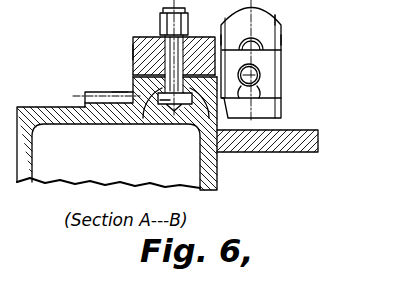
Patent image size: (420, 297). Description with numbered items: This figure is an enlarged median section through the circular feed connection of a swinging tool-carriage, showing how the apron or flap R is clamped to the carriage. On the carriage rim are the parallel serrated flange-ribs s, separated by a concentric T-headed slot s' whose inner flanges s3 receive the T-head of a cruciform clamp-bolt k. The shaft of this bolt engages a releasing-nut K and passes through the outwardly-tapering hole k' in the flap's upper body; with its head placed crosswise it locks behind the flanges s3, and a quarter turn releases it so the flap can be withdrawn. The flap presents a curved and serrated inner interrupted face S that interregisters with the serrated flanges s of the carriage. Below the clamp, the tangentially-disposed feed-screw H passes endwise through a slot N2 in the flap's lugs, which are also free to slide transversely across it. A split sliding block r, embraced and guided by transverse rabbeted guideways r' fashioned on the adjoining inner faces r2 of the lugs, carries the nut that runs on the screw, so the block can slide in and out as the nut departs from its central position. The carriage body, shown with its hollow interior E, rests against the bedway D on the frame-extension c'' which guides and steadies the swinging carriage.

The base body / hollow casting E is at (117, 133).
The serrated flange-rib s is at (106, 90).
The T-headed clamp-bolt k is at (172, 47).
The outwardly-tapering hole k' is at (107, 45).
The serrated inner interrupted face S is at (133, 75).
The releasing-nut K is at (174, 46).
The inner flanges of the slot s3 is at (143, 108).
The T-headed slot s' is at (155, 126).
The swing-carriage apron or flap R is at (266, 61).
The rabbeted guideway r' is at (251, 35).
The inner face of lug r2 is at (276, 25).
The split sliding block r is at (263, 103).
The slot in flap lug N2 is at (262, 43).
The bearing block N' is at (244, 74).
The feed-screw H is at (260, 78).
The bedway D is at (237, 152).
The strip of bed plate c'' is at (267, 154).